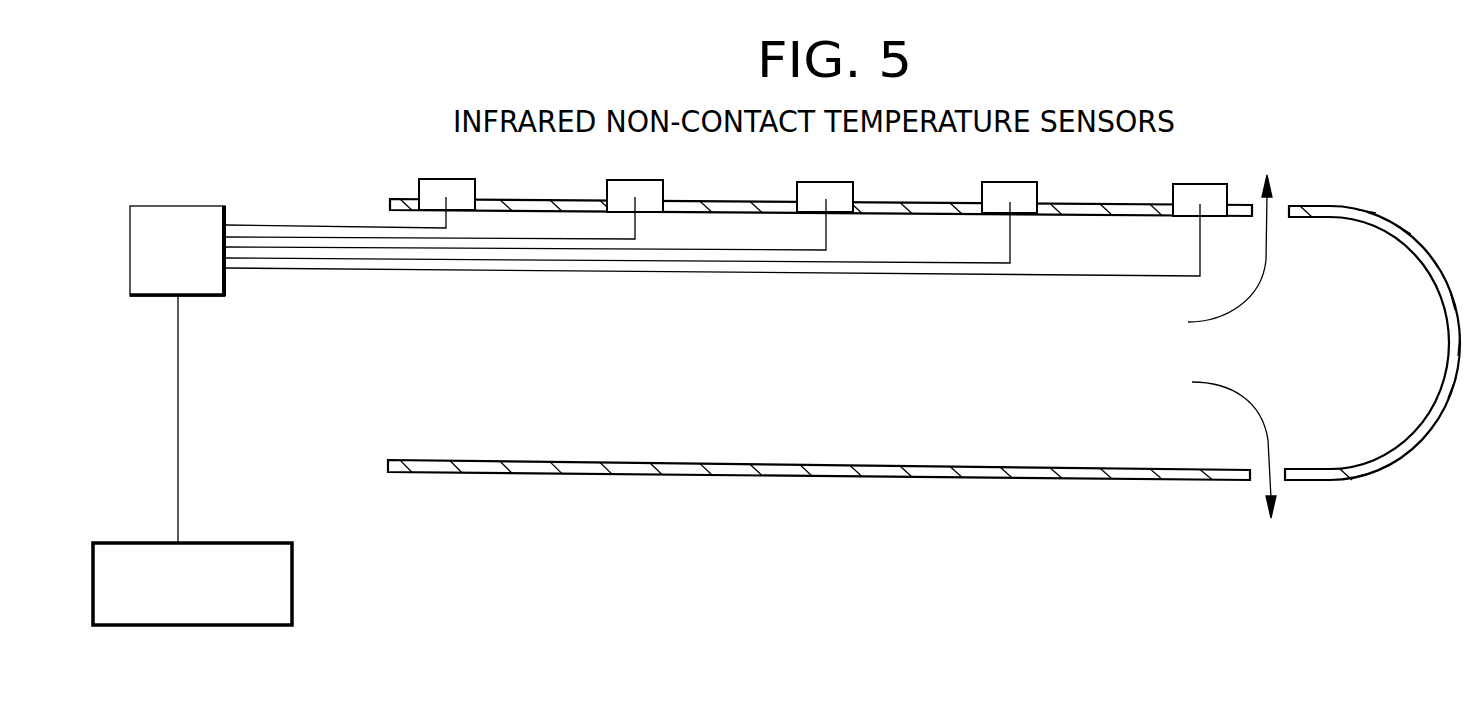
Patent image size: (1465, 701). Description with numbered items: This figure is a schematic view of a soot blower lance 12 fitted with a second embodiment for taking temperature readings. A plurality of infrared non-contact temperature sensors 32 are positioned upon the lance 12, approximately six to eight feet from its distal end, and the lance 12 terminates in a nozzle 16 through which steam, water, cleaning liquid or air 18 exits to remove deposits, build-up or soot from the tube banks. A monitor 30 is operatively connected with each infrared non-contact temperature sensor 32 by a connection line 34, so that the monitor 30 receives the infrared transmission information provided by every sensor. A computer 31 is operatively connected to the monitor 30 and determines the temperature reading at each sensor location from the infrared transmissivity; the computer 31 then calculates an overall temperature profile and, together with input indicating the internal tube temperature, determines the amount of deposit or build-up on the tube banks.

The lance 12 is at (843, 477).
The nozzle 16 is at (1278, 208).
The steam, water, cleaning liquid or air 18 is at (1267, 483).
The monitor 30 is at (178, 215).
The computer 31 is at (217, 548).
The infrared non-contact temperature sensors 32 is at (987, 192).
The connection line 34 is at (620, 273).